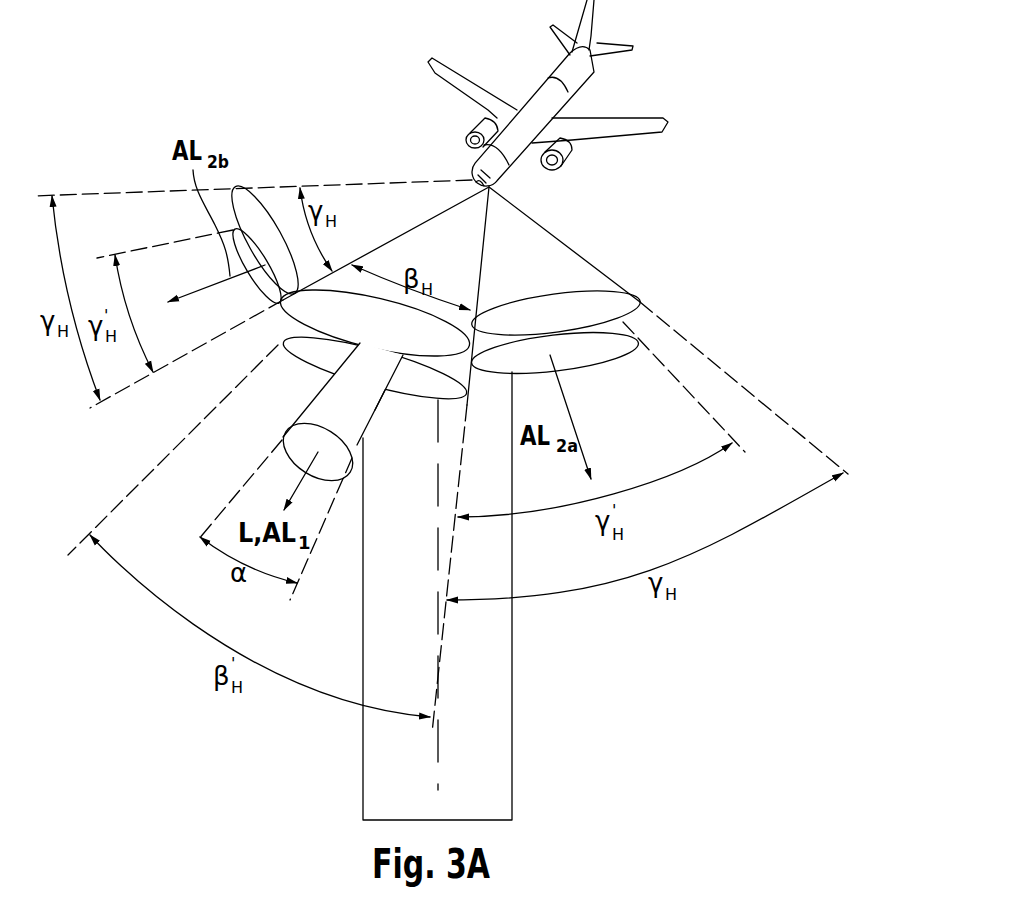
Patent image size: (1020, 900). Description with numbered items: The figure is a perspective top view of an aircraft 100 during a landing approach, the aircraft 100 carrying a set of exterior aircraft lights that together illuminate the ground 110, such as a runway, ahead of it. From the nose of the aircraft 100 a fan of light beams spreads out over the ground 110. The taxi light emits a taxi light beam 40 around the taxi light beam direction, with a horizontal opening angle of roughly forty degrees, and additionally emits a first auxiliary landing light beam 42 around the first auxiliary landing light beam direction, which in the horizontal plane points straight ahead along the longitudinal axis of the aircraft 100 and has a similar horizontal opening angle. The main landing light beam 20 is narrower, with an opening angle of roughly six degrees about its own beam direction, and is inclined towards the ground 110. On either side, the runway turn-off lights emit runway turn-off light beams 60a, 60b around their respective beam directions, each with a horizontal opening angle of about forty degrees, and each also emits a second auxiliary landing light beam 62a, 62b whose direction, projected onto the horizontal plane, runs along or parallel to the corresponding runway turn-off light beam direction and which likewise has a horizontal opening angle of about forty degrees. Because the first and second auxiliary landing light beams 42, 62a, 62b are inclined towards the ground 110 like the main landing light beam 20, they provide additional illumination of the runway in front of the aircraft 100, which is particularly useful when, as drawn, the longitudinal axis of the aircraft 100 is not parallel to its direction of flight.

The aircraft 100 is at (513, 82).
The runway turn-off light beam 60b is at (356, 162).
The runway turn-off light beam 60a is at (632, 250).
The second auxiliary landing light beam 62b is at (247, 289).
The second auxiliary landing light beam 62a is at (611, 371).
The taxi light beam 40 is at (280, 331).
The first auxiliary landing light beam 42 is at (306, 377).
The main landing light beam 20 is at (383, 430).
The ground 110 is at (500, 740).